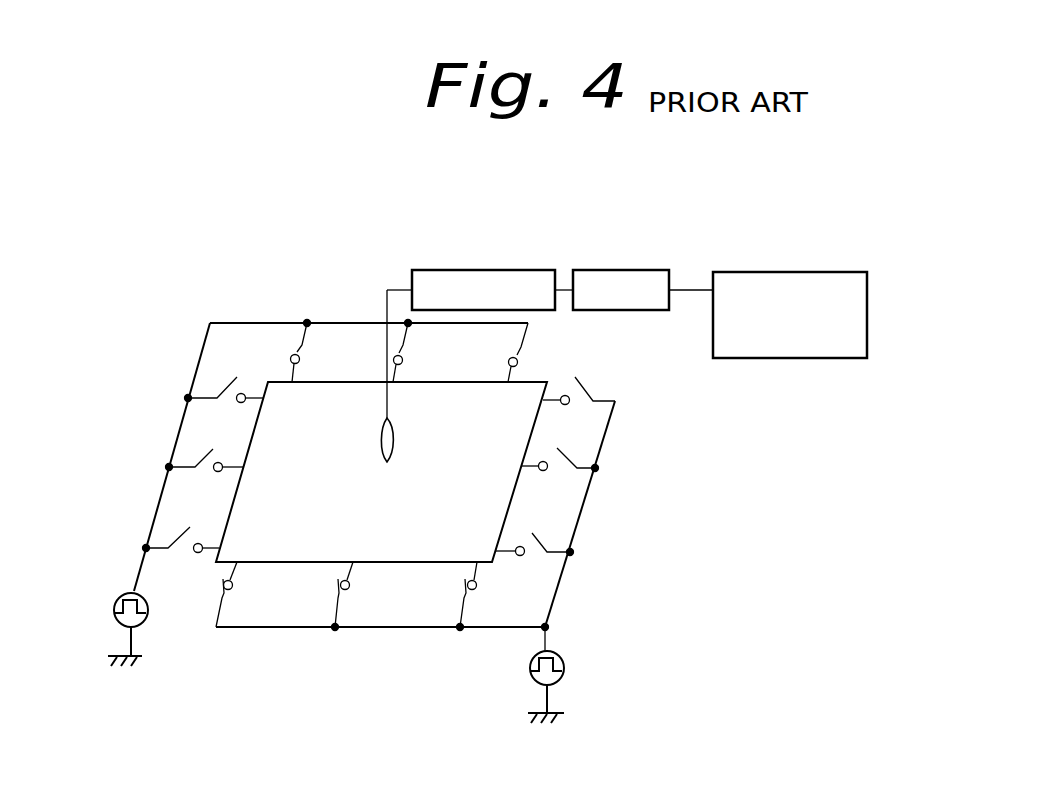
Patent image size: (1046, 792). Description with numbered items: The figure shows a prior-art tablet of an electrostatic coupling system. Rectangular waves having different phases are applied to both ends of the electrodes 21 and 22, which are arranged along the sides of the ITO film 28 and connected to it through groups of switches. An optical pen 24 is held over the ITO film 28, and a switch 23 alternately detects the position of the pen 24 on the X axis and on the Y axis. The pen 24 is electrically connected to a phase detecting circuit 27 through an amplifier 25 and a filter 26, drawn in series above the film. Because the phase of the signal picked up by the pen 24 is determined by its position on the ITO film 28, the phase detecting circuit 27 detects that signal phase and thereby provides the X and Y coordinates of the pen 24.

The electrode 21 is at (598, 457).
The electrode 22 is at (178, 428).
The switch 23 is at (592, 384).
The optical pen 24 is at (380, 440).
The amplifier 25 is at (478, 270).
The filter 26 is at (620, 270).
The phase detecting circuit 27 is at (790, 272).
The ITO film 28 is at (408, 561).